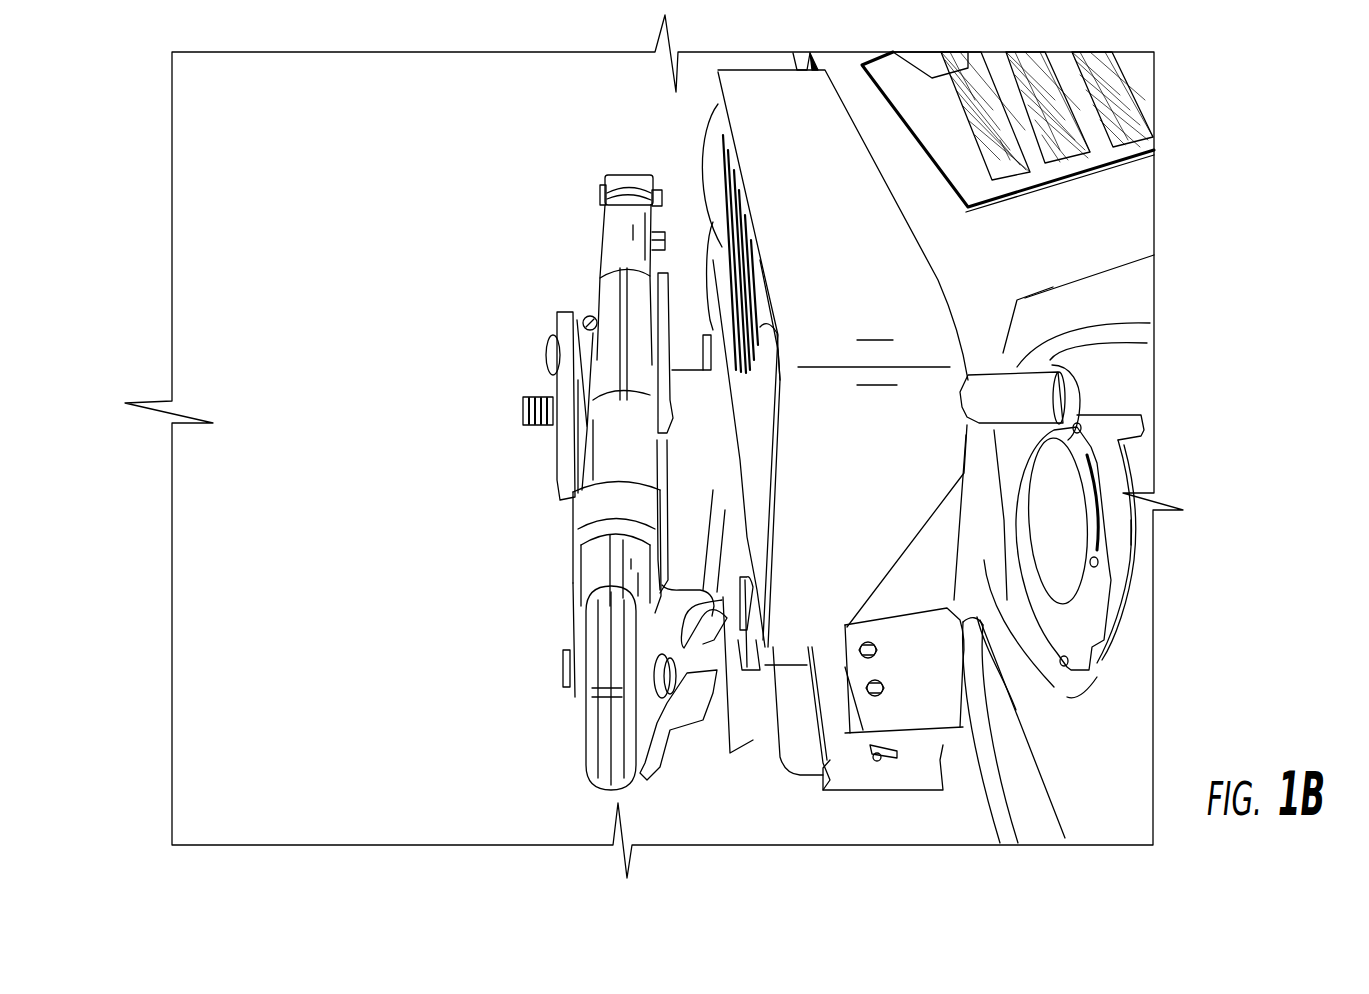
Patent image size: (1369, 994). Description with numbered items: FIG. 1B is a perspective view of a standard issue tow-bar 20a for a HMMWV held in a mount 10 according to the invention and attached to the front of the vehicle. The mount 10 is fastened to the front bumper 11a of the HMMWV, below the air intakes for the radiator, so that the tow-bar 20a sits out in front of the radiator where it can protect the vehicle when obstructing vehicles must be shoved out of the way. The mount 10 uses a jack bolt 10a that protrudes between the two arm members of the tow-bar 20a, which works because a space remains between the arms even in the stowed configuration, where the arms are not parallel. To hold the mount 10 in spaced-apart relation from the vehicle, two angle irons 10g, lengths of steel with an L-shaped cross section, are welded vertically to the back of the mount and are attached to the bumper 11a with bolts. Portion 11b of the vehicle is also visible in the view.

The mount 10 is at (491, 220).
The jack bolt 10a is at (523, 410).
The angle irons 10g is at (687, 413).
The front bumper 11a is at (773, 757).
The housing panel 11b is at (787, 153).
The standard issue tow-bar 20a is at (573, 586).